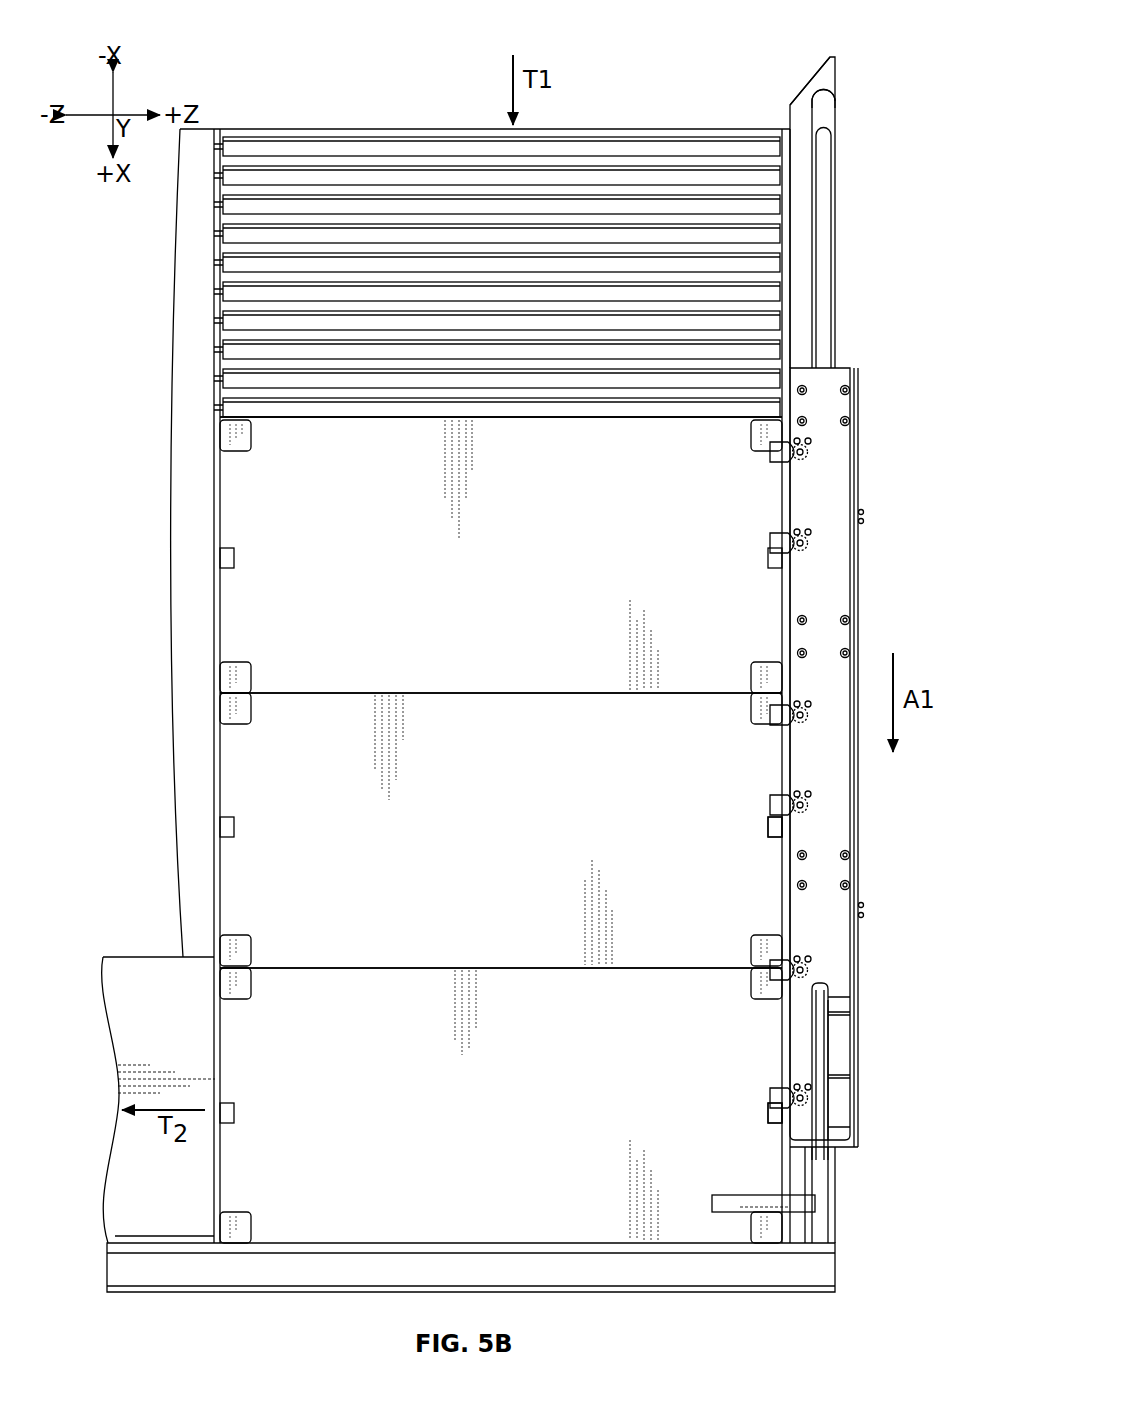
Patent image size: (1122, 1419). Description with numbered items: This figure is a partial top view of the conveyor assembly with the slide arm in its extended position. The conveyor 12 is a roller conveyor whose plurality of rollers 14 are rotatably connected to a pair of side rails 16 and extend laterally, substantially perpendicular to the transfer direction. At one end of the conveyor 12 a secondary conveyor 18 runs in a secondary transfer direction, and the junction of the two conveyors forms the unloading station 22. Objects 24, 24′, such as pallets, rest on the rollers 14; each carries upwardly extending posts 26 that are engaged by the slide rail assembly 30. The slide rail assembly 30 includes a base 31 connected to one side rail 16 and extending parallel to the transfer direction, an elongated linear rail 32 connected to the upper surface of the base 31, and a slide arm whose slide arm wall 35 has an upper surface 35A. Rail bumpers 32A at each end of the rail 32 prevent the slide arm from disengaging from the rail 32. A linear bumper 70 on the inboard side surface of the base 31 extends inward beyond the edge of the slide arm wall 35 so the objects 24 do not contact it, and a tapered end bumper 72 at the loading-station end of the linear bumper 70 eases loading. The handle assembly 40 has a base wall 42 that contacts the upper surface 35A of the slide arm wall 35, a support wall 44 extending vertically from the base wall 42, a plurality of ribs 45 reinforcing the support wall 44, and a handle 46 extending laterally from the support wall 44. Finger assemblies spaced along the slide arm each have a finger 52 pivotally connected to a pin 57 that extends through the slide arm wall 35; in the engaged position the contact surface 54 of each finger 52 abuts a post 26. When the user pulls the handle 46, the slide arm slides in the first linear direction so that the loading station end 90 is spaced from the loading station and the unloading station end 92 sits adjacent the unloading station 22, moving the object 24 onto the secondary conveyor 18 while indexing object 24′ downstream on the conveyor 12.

The conveyor 12 is at (577, 122).
The rollers 14 is at (262, 145).
The side rails 16 is at (183, 905).
The secondary conveyor 18 is at (130, 1166).
The unloading station 22 is at (143, 1050).
The object 24 is at (250, 1035).
The object 24′ is at (340, 725).
The posts 26 is at (236, 557).
The slide rail assembly 30 is at (887, 875).
The base 31 is at (838, 226).
The rail 32 is at (823, 186).
The rail bumpers 32A is at (825, 110).
The slide arm wall 35 is at (852, 368).
The upper surface 35A is at (842, 607).
The handle assembly 40 is at (862, 1103).
The base wall 42 is at (845, 1058).
The support wall 44 is at (823, 1170).
The ribs 45 is at (838, 1040).
The handle 46 is at (735, 1200).
The finger 52 is at (770, 452).
The contact surface 54 is at (770, 812).
The pin 57 is at (803, 460).
The linear bumper 70 is at (802, 158).
The end bumper 72 is at (828, 78).
The loading station end 90 is at (826, 386).
The unloading station end 92 is at (845, 1150).